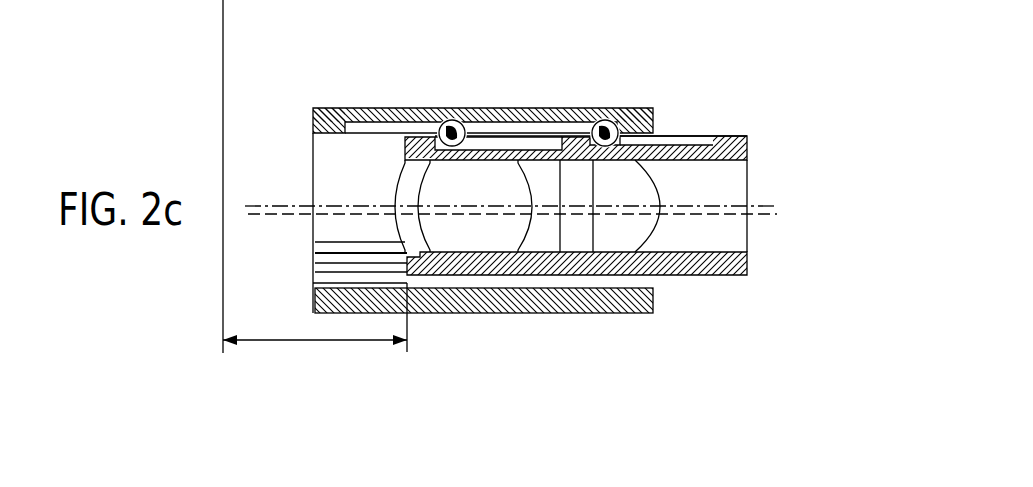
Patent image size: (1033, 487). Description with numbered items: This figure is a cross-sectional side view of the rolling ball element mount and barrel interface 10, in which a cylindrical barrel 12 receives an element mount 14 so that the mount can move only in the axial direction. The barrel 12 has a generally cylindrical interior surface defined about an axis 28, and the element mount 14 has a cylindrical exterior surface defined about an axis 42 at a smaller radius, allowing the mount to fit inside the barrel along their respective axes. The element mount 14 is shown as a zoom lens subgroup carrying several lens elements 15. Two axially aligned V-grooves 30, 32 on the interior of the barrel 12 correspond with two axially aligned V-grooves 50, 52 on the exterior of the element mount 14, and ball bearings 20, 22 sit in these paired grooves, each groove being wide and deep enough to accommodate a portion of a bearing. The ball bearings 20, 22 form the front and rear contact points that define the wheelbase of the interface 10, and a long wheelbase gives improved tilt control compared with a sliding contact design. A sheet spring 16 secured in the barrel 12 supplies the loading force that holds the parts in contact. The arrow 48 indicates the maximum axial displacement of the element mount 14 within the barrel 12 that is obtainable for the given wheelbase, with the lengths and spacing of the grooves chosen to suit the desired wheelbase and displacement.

The rolling ball element mount and barrel interface 10 is at (717, 78).
The barrel 12 is at (638, 108).
The element mount 14 is at (747, 150).
The lens elements 15 is at (620, 243).
The sheet spring 16 is at (337, 267).
The ball bearing 20 is at (447, 121).
The ball bearing 22 is at (607, 121).
The axis 28 is at (762, 217).
The V-groove 30 is at (362, 123).
The V-groove 32 is at (557, 133).
The axis 42 is at (762, 203).
The maximum displacement 48 is at (347, 342).
The V-groove 50 is at (489, 138).
The V-groove 52 is at (692, 140).